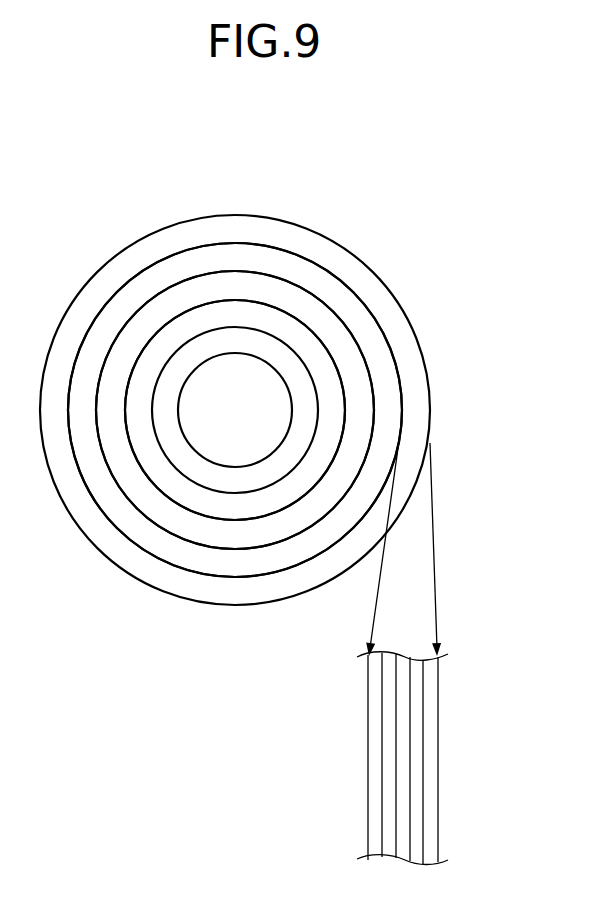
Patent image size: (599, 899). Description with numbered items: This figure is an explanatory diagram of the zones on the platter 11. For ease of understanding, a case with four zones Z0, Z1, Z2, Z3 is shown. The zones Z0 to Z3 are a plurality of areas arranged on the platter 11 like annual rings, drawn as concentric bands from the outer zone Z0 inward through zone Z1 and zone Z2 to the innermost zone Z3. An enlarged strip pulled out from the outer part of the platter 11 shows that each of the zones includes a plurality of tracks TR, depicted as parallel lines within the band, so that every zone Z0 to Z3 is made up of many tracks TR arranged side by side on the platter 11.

The platter 11 is at (347, 152).
The zone Z0 is at (392, 322).
The zone Z1 is at (333, 292).
The zone Z2 is at (277, 295).
The zone Z3 is at (233, 342).
The track TR is at (373, 713).